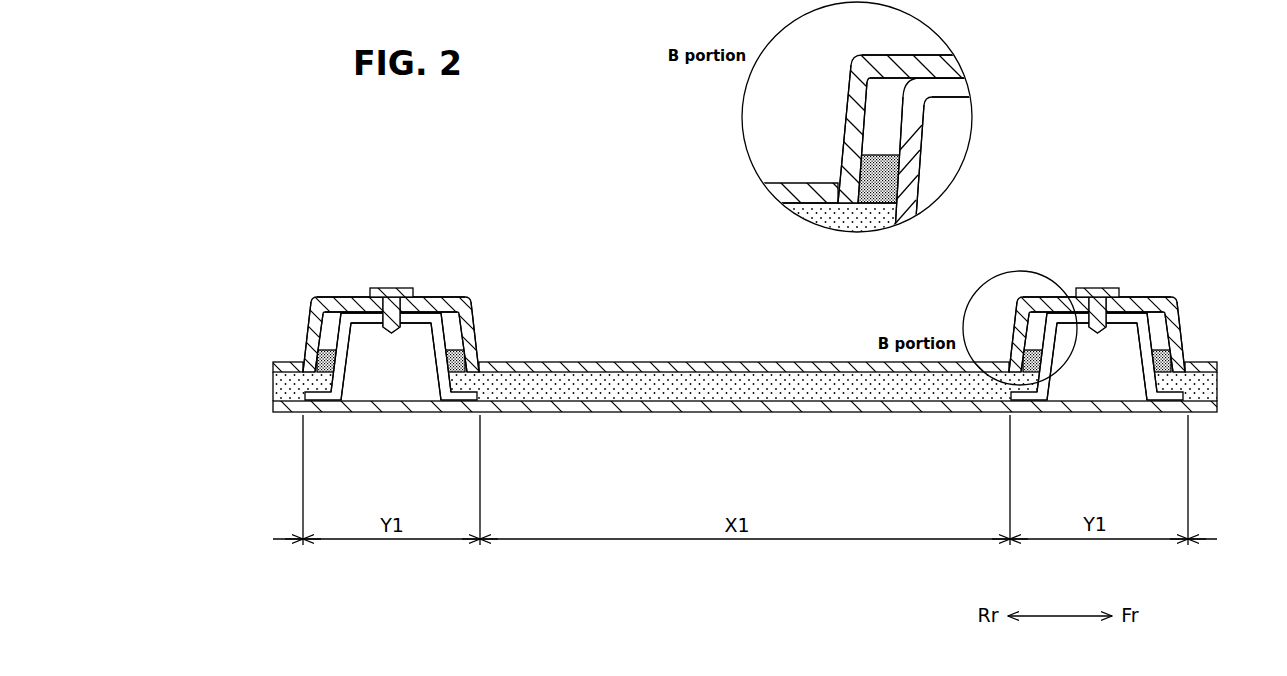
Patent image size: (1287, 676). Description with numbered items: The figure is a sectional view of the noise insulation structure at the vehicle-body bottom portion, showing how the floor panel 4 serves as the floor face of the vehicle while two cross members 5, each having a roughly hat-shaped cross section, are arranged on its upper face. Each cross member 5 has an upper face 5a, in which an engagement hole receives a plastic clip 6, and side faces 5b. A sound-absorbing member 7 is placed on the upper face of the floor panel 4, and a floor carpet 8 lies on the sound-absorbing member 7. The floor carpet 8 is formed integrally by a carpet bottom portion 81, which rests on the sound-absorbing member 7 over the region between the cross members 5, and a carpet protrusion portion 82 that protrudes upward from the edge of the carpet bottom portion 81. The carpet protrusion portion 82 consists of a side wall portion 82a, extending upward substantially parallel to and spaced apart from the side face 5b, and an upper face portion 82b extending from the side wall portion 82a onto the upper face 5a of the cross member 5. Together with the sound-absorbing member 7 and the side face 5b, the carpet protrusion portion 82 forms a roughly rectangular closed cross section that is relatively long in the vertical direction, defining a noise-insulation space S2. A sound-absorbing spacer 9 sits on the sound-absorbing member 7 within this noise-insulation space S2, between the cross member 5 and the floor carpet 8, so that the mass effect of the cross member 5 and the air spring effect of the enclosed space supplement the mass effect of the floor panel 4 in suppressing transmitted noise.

The floor panel 4 is at (745, 313).
The cross member 5 is at (744, 277).
The upper face of the cross member 5a is at (370, 325).
The side face of the cross member 5b is at (362, 350).
The plastic clip 6 is at (391, 286).
The sound-absorbing member 7 is at (296, 403).
The floor carpet 8 is at (741, 360).
The carpet bottom portion 81 is at (815, 373).
The carpet protrusion portion 82 is at (744, 189).
The side wall portion 82a is at (306, 356).
The upper face portion 82b is at (445, 298).
The sound-absorbing spacer 9 is at (325, 343).
The noise-insulation space S2 is at (885, 108).